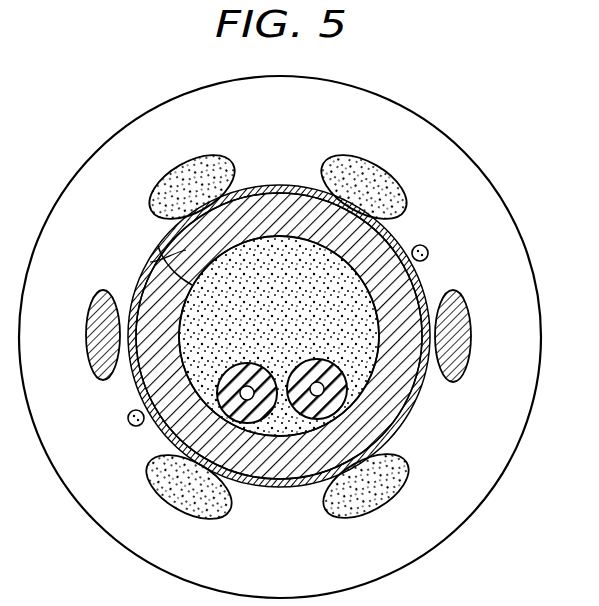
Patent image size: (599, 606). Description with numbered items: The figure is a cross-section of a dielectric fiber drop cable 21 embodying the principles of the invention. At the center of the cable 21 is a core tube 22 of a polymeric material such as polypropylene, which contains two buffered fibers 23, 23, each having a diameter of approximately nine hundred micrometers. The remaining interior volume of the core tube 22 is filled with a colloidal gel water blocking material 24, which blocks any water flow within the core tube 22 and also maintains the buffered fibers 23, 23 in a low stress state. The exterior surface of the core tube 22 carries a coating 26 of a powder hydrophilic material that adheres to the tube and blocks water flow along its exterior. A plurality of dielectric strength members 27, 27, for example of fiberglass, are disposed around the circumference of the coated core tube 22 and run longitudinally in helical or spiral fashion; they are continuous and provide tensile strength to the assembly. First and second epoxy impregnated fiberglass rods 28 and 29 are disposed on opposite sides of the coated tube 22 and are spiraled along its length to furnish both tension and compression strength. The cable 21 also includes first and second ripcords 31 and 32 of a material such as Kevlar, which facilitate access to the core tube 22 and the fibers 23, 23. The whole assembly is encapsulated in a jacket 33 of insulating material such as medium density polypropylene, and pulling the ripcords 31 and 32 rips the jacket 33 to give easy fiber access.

The dielectric fiber drop cable 21 is at (294, 337).
The core tube 22 is at (401, 277).
The buffered fibers 23 is at (312, 426).
The colloidal gel water blocking material 24 is at (170, 254).
The coating of hydrophilic material 26 is at (136, 395).
The dielectric strength members 27 is at (326, 160).
The first epoxy impregnated fiberglass rod 28 is at (86, 338).
The second epoxy impregnated fiberglass rod 29 is at (471, 335).
The first ripcord 31 is at (132, 426).
The second ripcord 32 is at (426, 247).
The jacket 33 is at (440, 528).